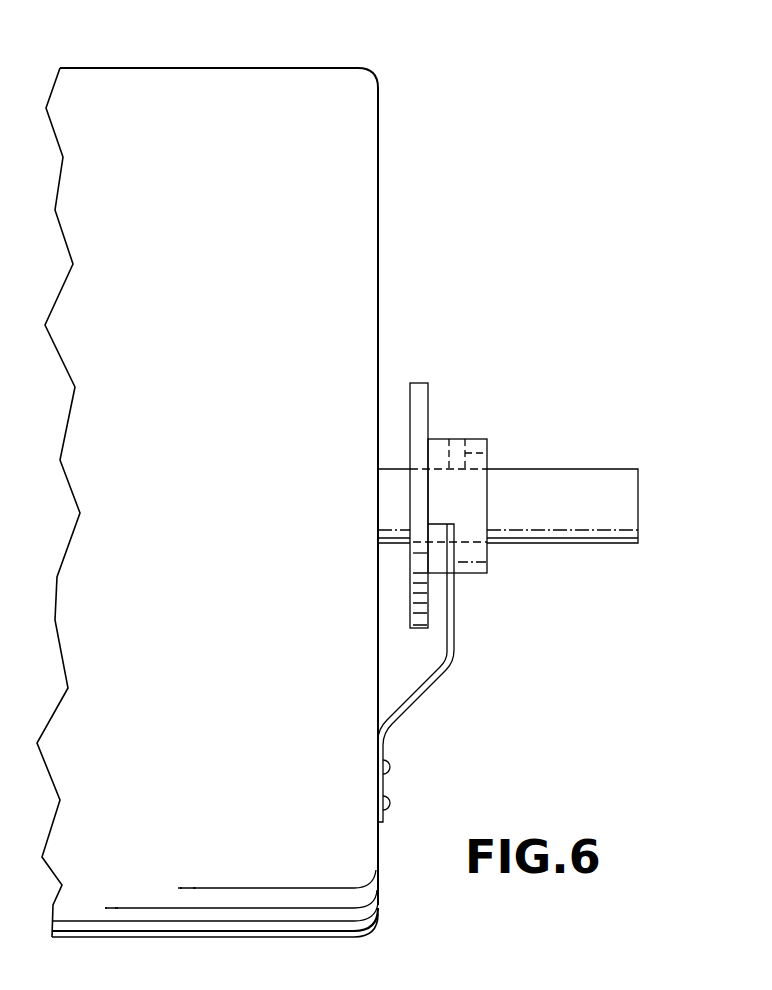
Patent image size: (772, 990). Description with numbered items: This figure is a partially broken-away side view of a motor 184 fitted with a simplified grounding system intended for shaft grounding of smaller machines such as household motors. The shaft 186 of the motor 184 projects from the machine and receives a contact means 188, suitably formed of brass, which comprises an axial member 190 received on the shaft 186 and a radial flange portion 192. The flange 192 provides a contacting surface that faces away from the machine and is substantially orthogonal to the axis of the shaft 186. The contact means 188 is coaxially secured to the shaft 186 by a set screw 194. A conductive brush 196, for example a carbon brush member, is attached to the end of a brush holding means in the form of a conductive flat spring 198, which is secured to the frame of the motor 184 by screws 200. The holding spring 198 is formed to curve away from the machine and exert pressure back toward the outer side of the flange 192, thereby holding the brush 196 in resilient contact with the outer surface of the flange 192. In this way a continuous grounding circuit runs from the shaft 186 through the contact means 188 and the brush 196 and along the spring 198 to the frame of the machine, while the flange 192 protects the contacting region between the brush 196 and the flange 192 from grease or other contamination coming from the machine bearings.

The motor 184 is at (287, 68).
The shaft 186 is at (600, 469).
The contact means 188 is at (501, 459).
The axial member 190 is at (473, 439).
The radial flange portion 192 is at (428, 392).
The set screw 194 is at (488, 452).
The conductive brush 196 is at (427, 553).
The conductive flat spring 198 is at (455, 650).
The screws 200 is at (392, 805).